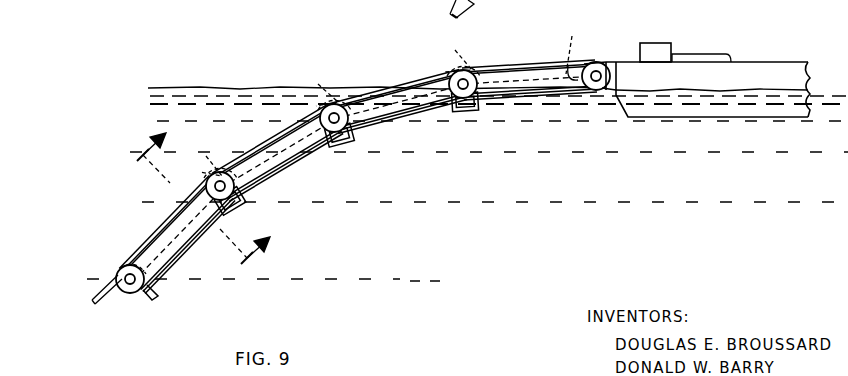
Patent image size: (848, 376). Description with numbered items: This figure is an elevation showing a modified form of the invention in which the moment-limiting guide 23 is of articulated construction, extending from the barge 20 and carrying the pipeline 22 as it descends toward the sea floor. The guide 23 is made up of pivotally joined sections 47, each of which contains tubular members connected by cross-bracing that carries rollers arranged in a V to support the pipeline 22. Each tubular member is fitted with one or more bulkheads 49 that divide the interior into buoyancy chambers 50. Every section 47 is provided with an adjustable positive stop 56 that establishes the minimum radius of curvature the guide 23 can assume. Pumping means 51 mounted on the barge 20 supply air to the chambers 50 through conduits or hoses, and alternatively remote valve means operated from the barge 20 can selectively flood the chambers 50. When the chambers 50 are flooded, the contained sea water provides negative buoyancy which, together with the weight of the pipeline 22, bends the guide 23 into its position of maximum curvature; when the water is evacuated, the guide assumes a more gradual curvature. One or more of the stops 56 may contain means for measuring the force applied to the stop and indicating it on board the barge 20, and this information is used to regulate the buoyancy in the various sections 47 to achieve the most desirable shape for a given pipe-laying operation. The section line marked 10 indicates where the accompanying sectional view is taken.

The section line 10 is at (209, 189).
The barge 20 is at (745, 70).
The pipeline 22 is at (95, 302).
The moment-limiting guide 23 is at (411, 181).
The pivotally joined sections 47 is at (178, 257).
The bulkheads 49 is at (128, 262).
The buoyancy chambers 50 is at (158, 234).
The pumping means 51 is at (656, 43).
The adjustable positive stop 56 is at (346, 146).